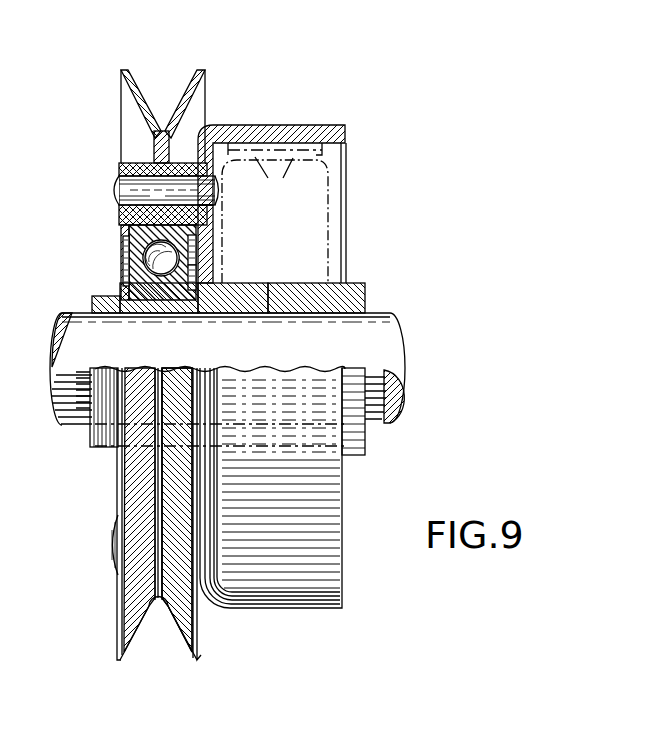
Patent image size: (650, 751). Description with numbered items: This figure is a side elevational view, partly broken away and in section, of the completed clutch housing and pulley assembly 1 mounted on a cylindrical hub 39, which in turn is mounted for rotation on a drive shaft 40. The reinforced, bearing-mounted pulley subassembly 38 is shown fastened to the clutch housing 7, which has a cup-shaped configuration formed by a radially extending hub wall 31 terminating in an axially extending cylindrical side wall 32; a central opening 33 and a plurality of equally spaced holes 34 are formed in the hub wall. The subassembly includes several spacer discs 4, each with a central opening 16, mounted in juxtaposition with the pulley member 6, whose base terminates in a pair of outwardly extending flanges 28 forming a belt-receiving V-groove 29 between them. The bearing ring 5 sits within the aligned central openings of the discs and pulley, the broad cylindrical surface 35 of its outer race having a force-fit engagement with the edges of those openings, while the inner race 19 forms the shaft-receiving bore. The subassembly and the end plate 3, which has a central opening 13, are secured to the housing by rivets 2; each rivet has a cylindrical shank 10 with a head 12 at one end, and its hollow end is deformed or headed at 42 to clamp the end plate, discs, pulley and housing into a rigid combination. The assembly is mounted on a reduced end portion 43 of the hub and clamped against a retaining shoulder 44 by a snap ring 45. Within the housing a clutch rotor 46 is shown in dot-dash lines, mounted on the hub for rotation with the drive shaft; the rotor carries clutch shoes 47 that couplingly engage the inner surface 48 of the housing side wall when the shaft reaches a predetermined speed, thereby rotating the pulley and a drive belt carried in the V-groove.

The clutch housing and pulley assembly 1 is at (219, 57).
The rivets 2 is at (128, 191).
The end plate 3 is at (118, 468).
The spacer discs 4 is at (130, 162).
The bearing ring 5 is at (130, 270).
The pulley member 6 is at (172, 590).
The clutch housing 7 is at (322, 598).
The shank 10 is at (208, 204).
The head 12 is at (118, 200).
The central opening 13 is at (120, 288).
The central opening 16 is at (215, 221).
The inner race 19 is at (172, 300).
The flanges 28 is at (196, 487).
The V-groove 29 is at (157, 500).
The hub wall 31 is at (200, 256).
The side wall 32 is at (315, 127).
The central opening 33 is at (200, 272).
The holes 34 is at (213, 164).
The cylindrical surface 35 is at (124, 232).
The bearing-mounted pulley subassembly 38 is at (178, 407).
The hub 39 is at (336, 300).
The drive shaft 40 is at (365, 353).
The headed end 42 is at (201, 197).
The reduced end portion 43 is at (92, 393).
The retaining shoulder 44 is at (231, 313).
The snap ring 45 is at (116, 303).
The clutch rotor 46 is at (331, 206).
The clutch shoes 47 is at (347, 166).
The inner surface 48 is at (263, 143).